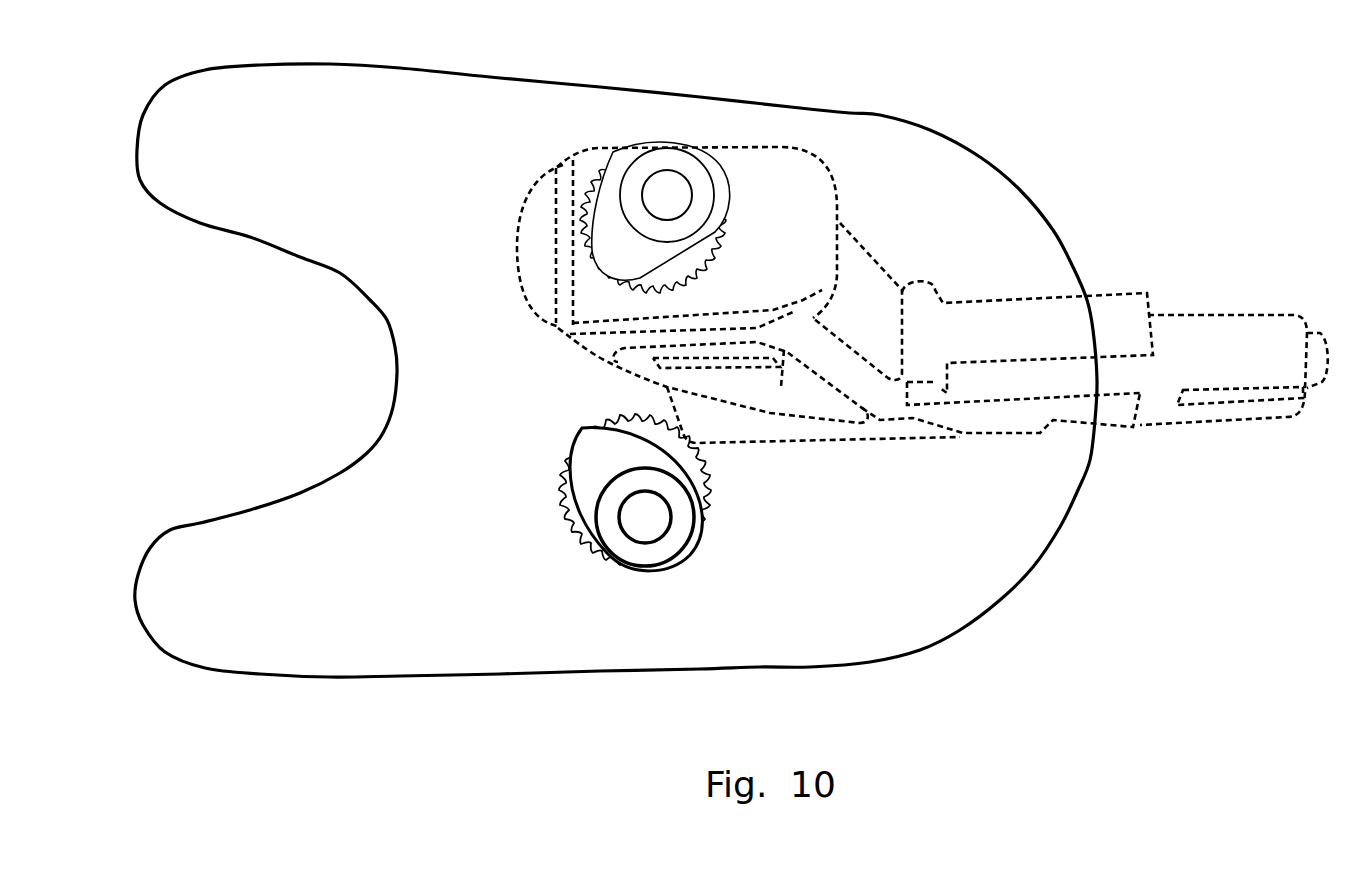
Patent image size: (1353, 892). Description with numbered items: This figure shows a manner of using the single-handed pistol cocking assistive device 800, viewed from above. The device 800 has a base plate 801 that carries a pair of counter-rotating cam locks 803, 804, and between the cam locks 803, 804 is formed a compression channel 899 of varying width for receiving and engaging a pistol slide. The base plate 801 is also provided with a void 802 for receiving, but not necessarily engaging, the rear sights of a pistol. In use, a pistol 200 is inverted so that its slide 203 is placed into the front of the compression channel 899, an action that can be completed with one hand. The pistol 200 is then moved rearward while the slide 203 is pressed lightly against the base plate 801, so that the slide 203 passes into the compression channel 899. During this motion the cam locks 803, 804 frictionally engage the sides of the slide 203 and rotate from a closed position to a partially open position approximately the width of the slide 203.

The single-handed pistol cocking assistive device 800 is at (951, 102).
The base plate 801 is at (412, 150).
The void 802 is at (247, 395).
The compression channel 899 is at (575, 380).
The cam lock 803 is at (640, 520).
The cam lock 804 is at (673, 188).
The slide 203 is at (811, 445).
The pistol 200 is at (1216, 293).